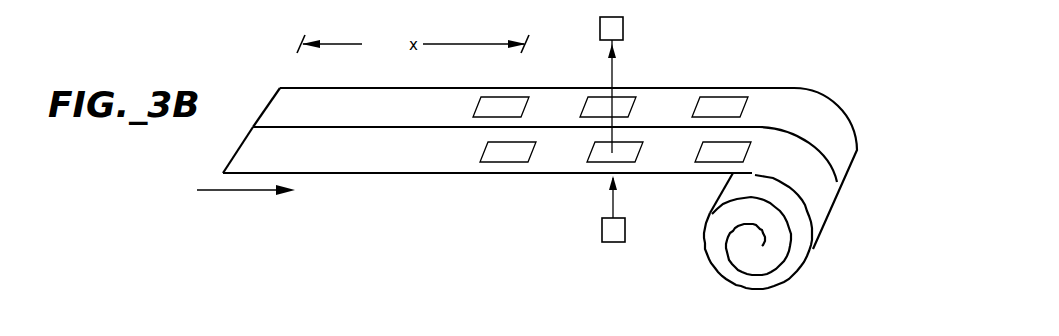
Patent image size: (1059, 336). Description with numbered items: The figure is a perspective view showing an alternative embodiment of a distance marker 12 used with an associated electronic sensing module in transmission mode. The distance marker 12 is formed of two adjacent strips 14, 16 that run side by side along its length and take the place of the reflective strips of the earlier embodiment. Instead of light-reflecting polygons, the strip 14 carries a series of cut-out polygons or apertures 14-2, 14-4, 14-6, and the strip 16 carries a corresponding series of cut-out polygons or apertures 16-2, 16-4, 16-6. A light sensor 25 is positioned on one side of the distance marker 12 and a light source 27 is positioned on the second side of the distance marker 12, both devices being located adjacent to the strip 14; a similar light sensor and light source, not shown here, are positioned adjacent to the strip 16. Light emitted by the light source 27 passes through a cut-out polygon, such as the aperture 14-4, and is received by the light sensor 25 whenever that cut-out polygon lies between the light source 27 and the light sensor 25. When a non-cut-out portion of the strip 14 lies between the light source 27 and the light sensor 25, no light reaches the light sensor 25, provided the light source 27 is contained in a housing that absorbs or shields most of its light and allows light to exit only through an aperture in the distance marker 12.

The distance marker 12 is at (540, 169).
The strip 14 is at (326, 160).
The strip 16 is at (387, 100).
The cut-out polygon 16-2 is at (495, 100).
The cut-out polygon 16-4 is at (622, 100).
The cut-out polygon 16-6 is at (718, 100).
The cut-out polygon 14-2 is at (515, 158).
The cut-out polygon 14-4 is at (605, 165).
The cut-out polygon 14-6 is at (715, 158).
The light sensor 25 is at (618, 32).
The light source 27 is at (606, 242).